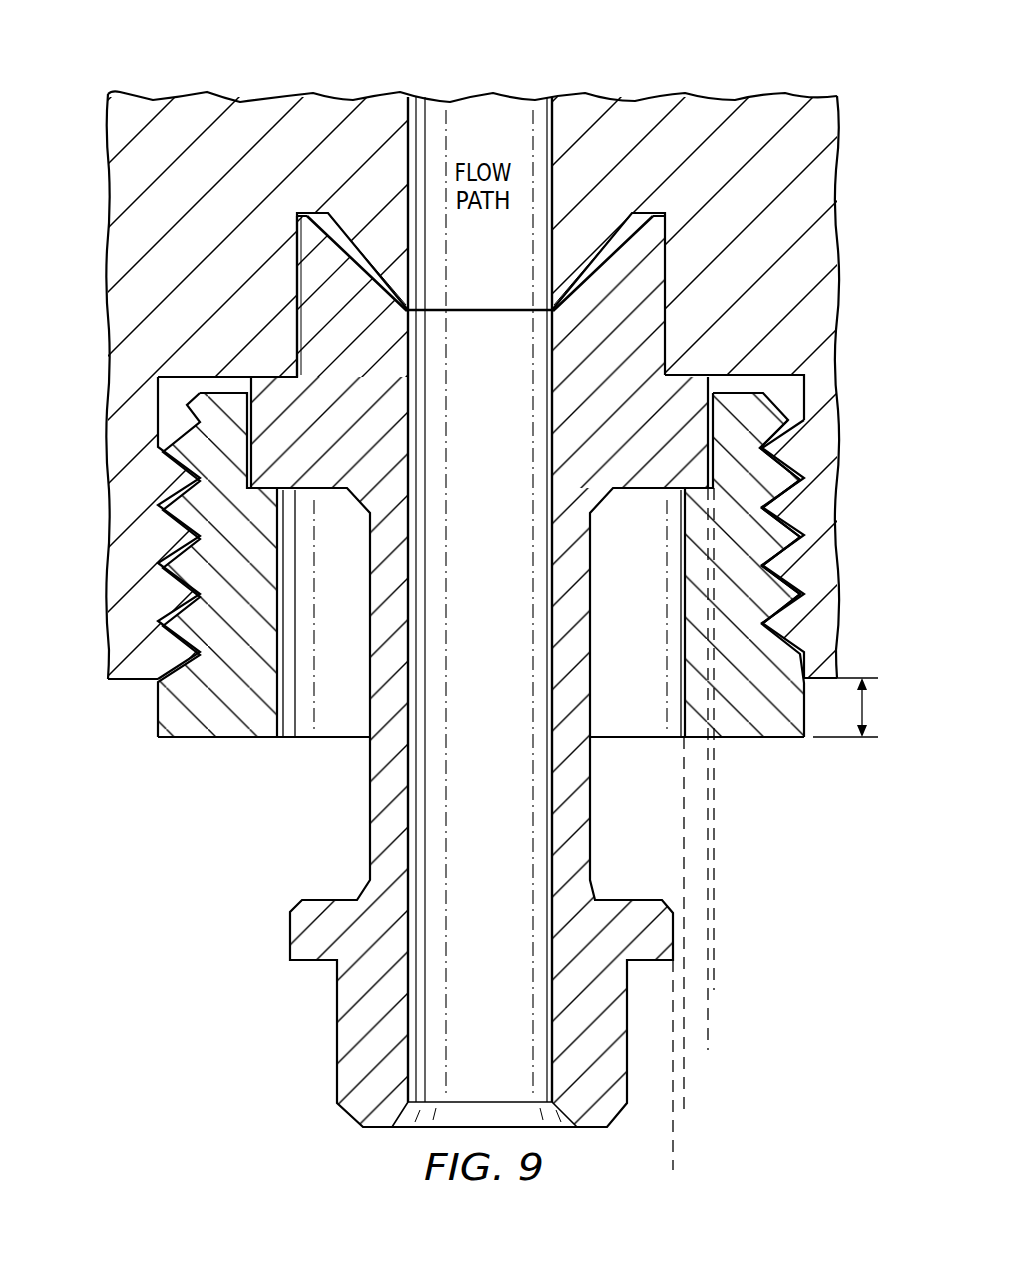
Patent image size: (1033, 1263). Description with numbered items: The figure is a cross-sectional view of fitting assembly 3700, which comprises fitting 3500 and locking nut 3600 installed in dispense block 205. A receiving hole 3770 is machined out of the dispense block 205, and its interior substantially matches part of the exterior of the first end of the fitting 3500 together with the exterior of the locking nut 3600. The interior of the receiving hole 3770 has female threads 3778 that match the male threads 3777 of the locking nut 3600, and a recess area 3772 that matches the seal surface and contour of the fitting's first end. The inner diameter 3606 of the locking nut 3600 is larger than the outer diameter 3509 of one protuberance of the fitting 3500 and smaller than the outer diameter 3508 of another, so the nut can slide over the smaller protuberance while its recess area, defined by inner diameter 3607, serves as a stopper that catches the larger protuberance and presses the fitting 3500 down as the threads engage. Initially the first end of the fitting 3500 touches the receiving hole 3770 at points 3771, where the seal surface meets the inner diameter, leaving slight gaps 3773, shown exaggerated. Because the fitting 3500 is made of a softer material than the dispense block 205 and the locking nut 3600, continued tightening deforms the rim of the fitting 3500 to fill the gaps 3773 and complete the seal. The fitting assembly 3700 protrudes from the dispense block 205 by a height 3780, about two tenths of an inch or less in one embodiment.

The dispense block 205 is at (302, 93).
The fitting 3500 is at (370, 798).
The locking nut 3600 is at (205, 737).
The fitting assembly 3700 is at (819, 860).
The receiving hole 3770 is at (164, 377).
The points 3771 is at (532, 312).
The recess area 3772 is at (286, 281).
The gaps 3773 is at (324, 212).
The male threads 3777 is at (784, 395).
The female threads 3778 is at (788, 449).
The height 3780 is at (862, 712).
The inner diameter 3607 is at (716, 976).
The outer diameter 3508 is at (710, 1040).
The inner diameter 3606 is at (686, 1090).
The outer diameter 3509 is at (675, 1153).